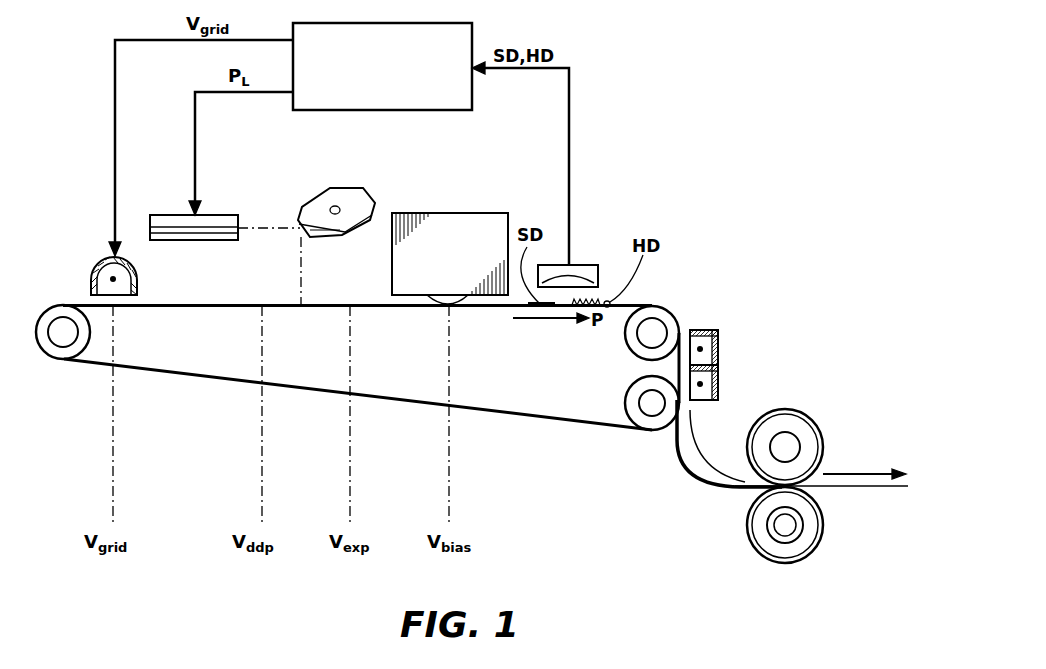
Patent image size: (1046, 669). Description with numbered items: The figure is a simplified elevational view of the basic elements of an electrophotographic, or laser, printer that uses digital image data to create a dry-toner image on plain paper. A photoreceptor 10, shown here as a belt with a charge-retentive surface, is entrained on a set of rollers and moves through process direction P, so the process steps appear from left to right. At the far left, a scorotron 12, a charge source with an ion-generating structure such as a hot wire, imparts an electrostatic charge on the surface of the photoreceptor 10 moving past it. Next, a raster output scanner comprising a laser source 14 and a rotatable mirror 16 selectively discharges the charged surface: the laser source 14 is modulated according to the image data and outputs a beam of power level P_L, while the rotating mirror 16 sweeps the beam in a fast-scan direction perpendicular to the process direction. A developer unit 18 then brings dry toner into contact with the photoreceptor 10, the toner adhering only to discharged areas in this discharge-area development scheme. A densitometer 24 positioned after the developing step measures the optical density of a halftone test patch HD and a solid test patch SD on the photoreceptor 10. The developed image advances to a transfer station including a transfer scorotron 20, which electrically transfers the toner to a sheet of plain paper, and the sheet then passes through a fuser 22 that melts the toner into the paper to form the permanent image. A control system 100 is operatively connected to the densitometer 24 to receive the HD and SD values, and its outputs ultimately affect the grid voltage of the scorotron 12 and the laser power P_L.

The photoreceptor 10 is at (572, 422).
The scorotron 12 is at (110, 253).
The laser source 14 is at (221, 213).
The rotatable mirror 16 is at (348, 188).
The developer unit 18 is at (450, 213).
The transfer scorotron 20 is at (722, 365).
The fuser 22 is at (785, 409).
The densitometer 24 is at (582, 265).
The control system 100 is at (367, 81).